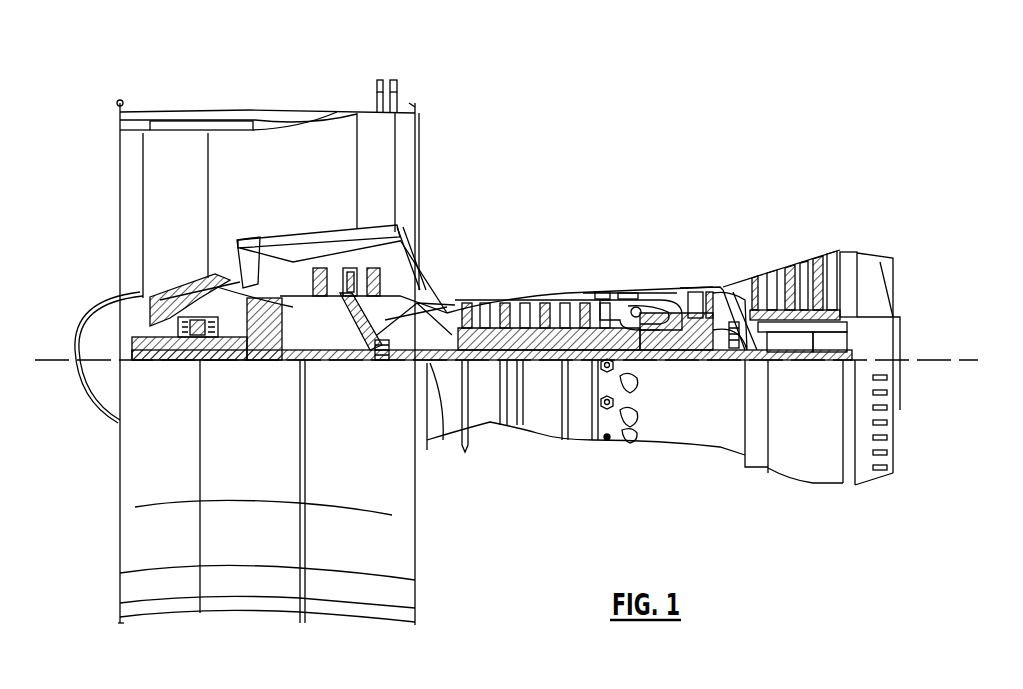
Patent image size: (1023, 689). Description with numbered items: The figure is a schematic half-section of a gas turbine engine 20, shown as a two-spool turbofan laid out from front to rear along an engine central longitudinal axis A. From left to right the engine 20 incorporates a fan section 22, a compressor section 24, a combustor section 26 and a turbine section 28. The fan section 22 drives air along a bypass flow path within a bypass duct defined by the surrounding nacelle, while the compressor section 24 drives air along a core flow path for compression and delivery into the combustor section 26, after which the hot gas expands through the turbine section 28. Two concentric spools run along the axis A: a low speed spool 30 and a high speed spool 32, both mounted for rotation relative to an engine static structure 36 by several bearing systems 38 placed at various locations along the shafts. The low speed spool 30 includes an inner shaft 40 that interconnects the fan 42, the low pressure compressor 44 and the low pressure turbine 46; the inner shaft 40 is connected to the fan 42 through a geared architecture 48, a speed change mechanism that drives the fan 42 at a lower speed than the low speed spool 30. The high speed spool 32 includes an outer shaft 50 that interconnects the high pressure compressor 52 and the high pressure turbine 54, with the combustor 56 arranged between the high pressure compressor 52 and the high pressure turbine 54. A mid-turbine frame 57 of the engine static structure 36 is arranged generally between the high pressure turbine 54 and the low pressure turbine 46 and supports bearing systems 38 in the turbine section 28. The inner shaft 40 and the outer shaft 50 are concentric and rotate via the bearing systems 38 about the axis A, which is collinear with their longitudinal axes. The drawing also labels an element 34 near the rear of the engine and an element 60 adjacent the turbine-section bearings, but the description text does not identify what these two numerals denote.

The gas turbine engine 20 is at (652, 153).
The fan section 22 is at (290, 86).
The compressor section 24 is at (300, 213).
The combustor section 26 is at (673, 213).
The turbine section 28 is at (855, 213).
The low speed spool 30 is at (547, 372).
The high speed spool 32 is at (582, 298).
The turbine exhaust case 34 is at (813, 363).
The engine static structure 36 is at (578, 450).
The bearing systems 38 is at (182, 362).
The inner shaft 40 is at (435, 437).
The fan 42 is at (189, 224).
The low pressure compressor 44 is at (400, 233).
The low pressure turbine 46 is at (800, 253).
The geared architecture 48 is at (270, 360).
The outer shaft 50 is at (650, 363).
The high pressure compressor 52 is at (522, 305).
The high pressure turbine 54 is at (695, 288).
The combustor 56 is at (642, 310).
The mid-turbine frame 57 is at (733, 275).
The bearing support 60 is at (760, 353).
The engine central longitudinal axis A is at (970, 360).